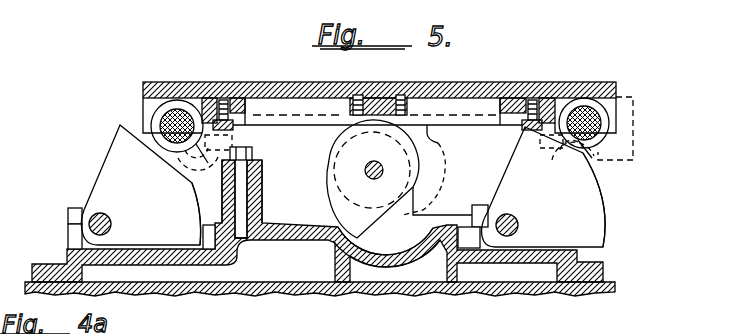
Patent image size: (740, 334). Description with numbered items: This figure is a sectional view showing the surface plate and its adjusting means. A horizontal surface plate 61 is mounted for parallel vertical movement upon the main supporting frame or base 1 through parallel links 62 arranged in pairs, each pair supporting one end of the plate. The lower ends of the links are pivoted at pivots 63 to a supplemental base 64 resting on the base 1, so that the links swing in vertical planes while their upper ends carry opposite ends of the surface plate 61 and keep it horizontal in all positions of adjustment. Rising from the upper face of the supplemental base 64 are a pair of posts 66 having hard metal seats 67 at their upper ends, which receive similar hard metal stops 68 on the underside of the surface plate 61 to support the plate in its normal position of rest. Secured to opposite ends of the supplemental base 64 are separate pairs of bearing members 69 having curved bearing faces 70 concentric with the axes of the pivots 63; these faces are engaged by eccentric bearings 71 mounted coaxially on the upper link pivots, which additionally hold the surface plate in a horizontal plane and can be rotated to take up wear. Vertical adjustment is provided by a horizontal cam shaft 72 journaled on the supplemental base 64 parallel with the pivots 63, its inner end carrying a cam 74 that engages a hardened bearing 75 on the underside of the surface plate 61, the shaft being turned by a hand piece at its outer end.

The main supporting frame or base 1 is at (279, 292).
The horizontal surface plate 61 is at (467, 83).
The parallel links 62 is at (143, 128).
The pivots 63 is at (97, 216).
The supplemental base 64 is at (68, 255).
The posts 66 is at (253, 206).
The hard metal seats 67 is at (253, 155).
The hard metal stops 68 is at (234, 127).
The bearing members 69 is at (109, 166).
The curved bearing faces 70 is at (193, 198).
The eccentric bearings 71 is at (170, 100).
The cam shaft 72 is at (366, 170).
The cam 74 is at (333, 214).
The hardened bearing 75 is at (368, 99).